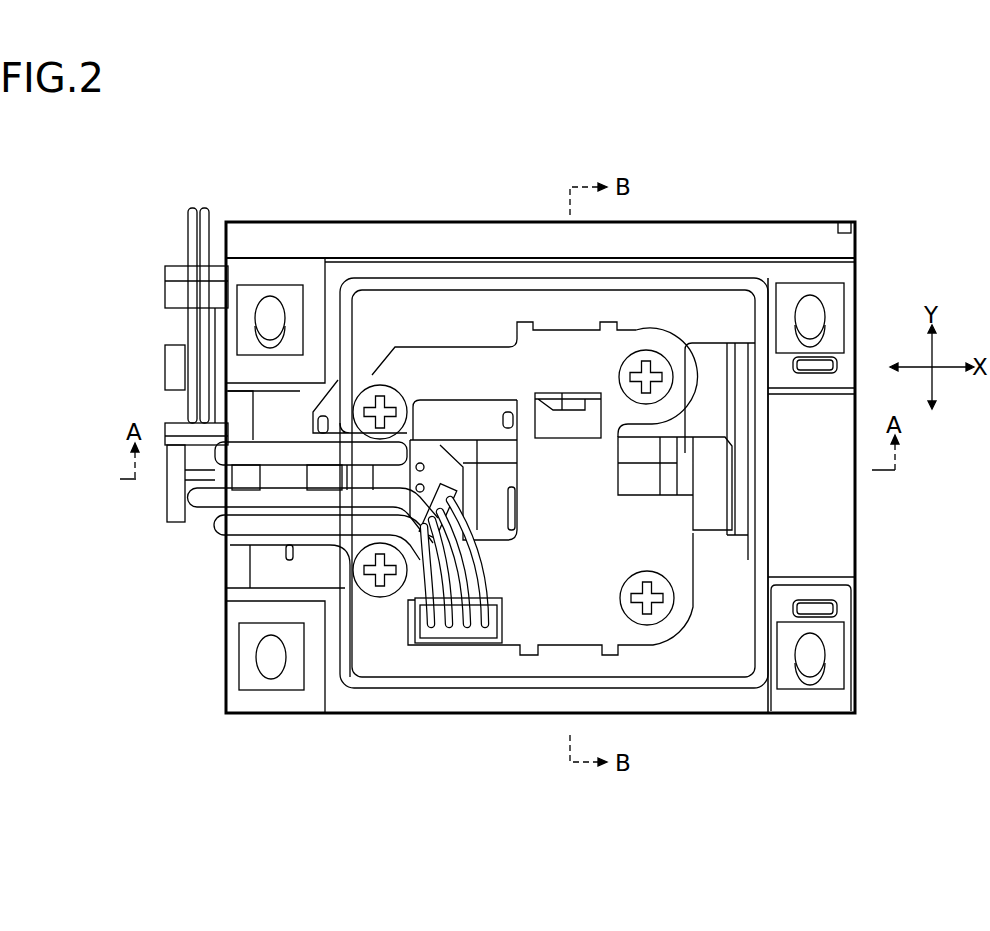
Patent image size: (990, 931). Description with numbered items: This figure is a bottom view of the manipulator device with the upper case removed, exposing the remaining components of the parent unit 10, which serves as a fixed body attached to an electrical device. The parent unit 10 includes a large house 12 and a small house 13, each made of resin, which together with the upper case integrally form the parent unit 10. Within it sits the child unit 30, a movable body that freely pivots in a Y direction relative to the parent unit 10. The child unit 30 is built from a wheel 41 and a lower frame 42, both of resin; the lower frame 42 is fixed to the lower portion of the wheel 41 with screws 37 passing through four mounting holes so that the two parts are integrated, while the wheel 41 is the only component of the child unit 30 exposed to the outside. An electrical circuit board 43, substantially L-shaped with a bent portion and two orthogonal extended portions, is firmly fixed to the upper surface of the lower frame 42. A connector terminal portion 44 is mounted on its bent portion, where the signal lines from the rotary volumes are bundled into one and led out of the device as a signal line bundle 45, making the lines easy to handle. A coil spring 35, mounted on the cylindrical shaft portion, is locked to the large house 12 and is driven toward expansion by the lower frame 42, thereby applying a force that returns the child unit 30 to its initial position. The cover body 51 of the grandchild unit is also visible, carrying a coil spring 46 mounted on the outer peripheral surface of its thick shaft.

The parent unit 10 is at (945, 183).
The large house 12 is at (815, 237).
The small house 13 is at (847, 422).
The child unit 30 is at (679, 636).
The coil spring 35 is at (322, 416).
The screws 37 is at (383, 388).
The wheel 41 is at (730, 627).
The lower frame 42 is at (578, 632).
The electrical circuit board 43 is at (458, 485).
The connector terminal portion 44 is at (459, 636).
The signal line bundle 45 is at (430, 618).
The coil spring 46 is at (508, 412).
The cover body 51 is at (650, 480).